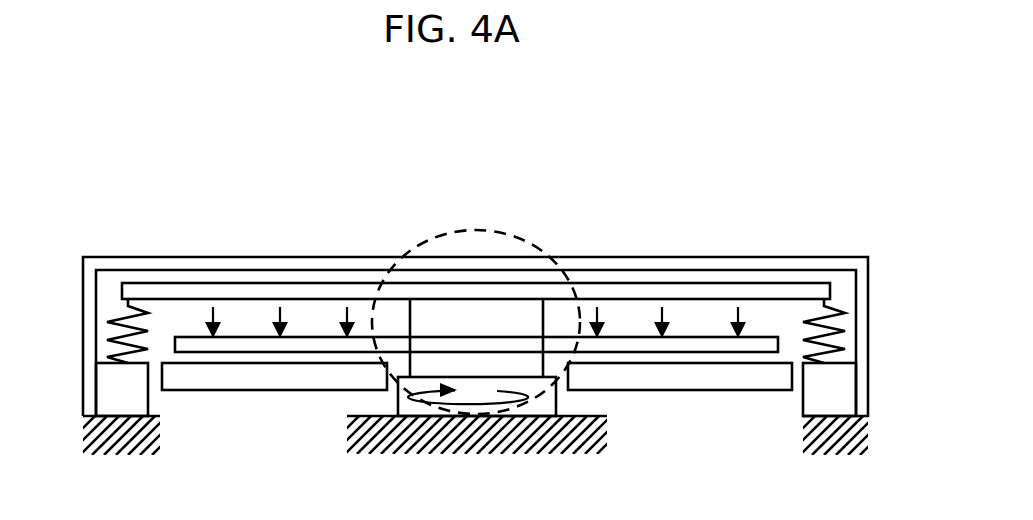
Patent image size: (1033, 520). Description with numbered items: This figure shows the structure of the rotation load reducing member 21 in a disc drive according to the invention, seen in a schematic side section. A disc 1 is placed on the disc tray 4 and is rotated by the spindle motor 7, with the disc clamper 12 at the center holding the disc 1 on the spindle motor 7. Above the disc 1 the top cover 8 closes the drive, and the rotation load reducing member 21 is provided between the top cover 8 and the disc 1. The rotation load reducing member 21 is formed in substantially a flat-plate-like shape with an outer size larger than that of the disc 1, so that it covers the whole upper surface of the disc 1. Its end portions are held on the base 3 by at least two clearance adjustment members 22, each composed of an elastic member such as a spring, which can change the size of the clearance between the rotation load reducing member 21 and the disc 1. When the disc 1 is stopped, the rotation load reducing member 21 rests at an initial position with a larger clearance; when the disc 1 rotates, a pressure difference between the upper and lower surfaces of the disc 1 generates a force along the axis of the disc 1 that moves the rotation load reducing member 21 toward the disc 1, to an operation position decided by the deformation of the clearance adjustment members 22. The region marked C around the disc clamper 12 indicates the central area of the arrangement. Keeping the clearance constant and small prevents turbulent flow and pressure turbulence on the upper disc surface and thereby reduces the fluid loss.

The disc 1 is at (708, 342).
The base 3 is at (101, 382).
The disc tray 4 is at (703, 383).
The spindle motor 7 is at (563, 370).
The top cover 8 is at (177, 258).
The disc clamper 12 is at (443, 305).
The rotation load reducing member 21 is at (648, 293).
The clearance adjustment member 22 is at (839, 323).
The region C is at (542, 233).